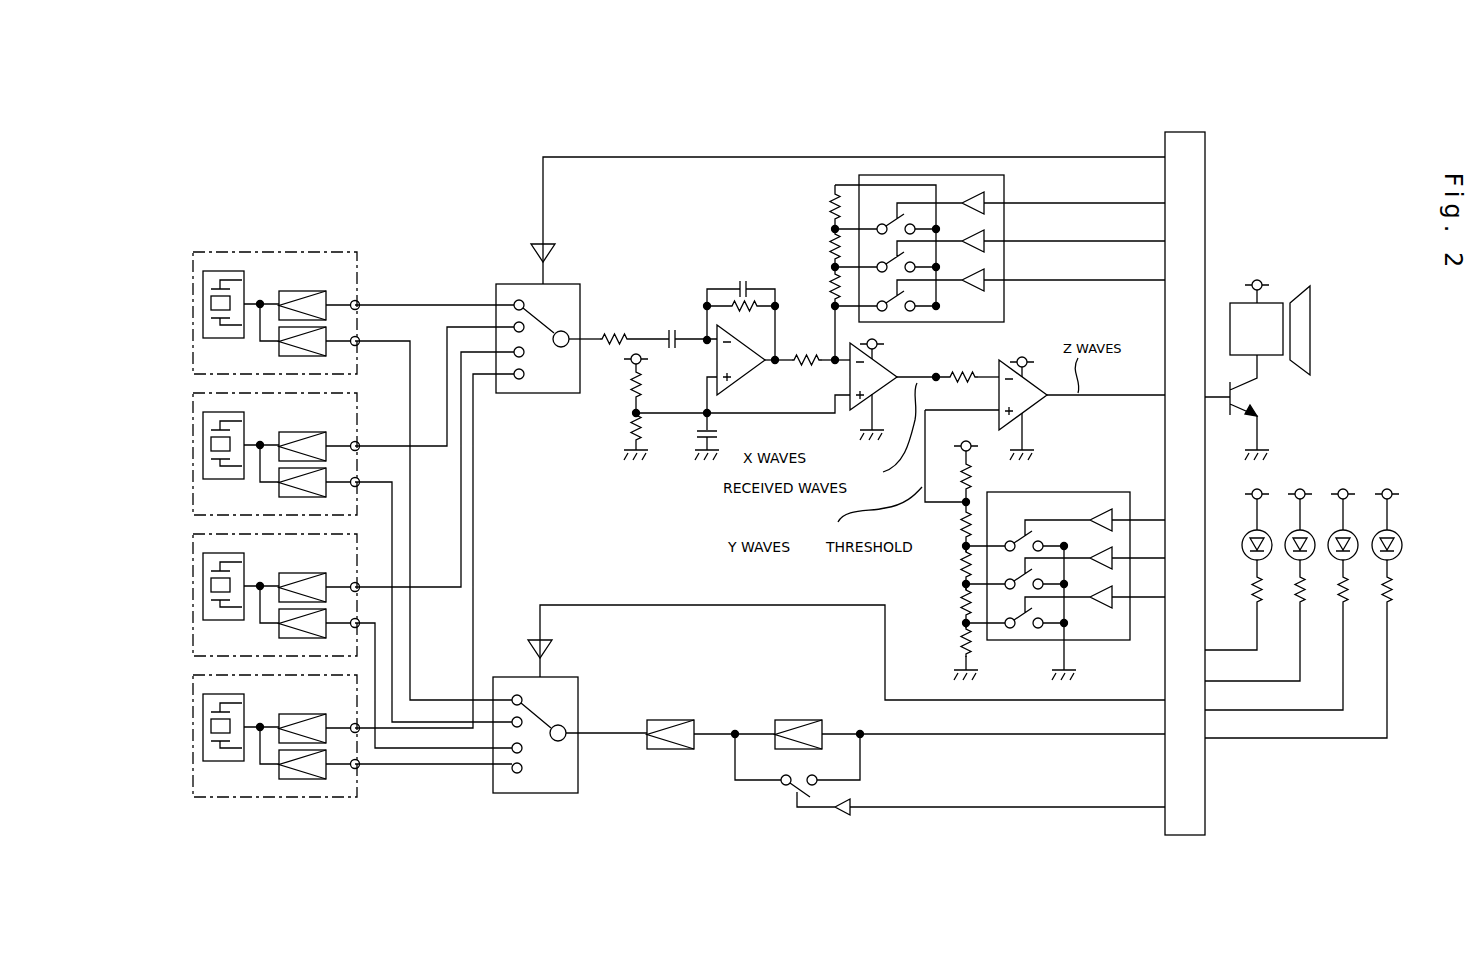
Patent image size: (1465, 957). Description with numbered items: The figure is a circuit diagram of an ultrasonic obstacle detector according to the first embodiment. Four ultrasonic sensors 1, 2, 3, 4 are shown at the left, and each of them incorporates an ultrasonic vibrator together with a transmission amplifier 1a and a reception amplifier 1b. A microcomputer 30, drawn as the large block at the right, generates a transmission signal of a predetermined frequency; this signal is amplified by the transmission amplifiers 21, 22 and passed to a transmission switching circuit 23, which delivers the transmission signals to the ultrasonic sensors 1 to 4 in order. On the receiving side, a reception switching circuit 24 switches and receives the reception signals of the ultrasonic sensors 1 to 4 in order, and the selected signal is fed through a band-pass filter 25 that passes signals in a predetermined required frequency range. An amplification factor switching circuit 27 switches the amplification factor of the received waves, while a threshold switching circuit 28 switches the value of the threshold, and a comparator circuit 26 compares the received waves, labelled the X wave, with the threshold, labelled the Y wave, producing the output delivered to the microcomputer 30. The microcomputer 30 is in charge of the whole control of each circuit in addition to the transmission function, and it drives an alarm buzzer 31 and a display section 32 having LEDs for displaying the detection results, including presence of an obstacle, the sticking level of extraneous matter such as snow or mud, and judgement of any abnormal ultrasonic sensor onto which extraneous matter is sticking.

The ultrasonic sensor 1 is at (254, 303).
The transmission amplifier 1a is at (290, 356).
The reception amplifier 1b is at (298, 291).
The ultrasonic sensor 2 is at (193, 407).
The ultrasonic sensor 3 is at (193, 549).
The ultrasonic sensor 4 is at (192, 684).
The transmission amplifier 21 is at (673, 720).
The transmission amplifier 22 is at (800, 720).
The transmission switching circuit 23 is at (578, 677).
The reception switching circuit 24 is at (575, 284).
The band-pass filter 25 is at (741, 289).
The comparator circuit 26 is at (1022, 352).
The amplification factor switching circuit 27 is at (1004, 188).
The threshold switching circuit 28 is at (1085, 492).
The microcomputer 30 is at (1205, 178).
The alarm buzzer 31 is at (1316, 307).
The display section 32 is at (1360, 523).